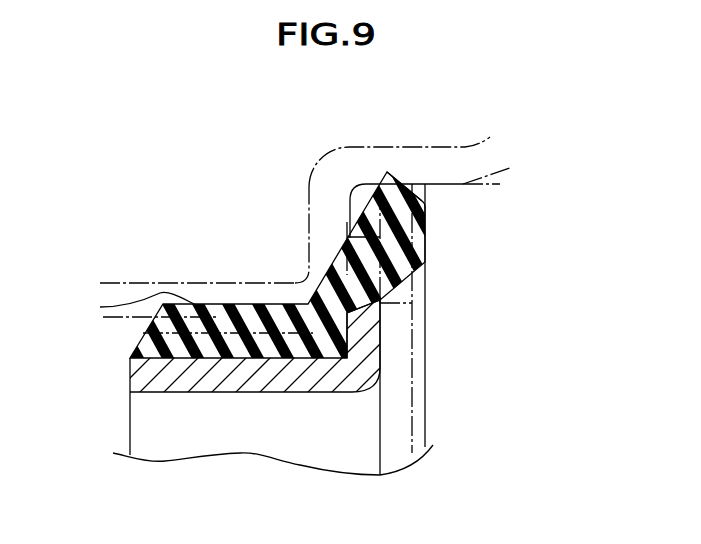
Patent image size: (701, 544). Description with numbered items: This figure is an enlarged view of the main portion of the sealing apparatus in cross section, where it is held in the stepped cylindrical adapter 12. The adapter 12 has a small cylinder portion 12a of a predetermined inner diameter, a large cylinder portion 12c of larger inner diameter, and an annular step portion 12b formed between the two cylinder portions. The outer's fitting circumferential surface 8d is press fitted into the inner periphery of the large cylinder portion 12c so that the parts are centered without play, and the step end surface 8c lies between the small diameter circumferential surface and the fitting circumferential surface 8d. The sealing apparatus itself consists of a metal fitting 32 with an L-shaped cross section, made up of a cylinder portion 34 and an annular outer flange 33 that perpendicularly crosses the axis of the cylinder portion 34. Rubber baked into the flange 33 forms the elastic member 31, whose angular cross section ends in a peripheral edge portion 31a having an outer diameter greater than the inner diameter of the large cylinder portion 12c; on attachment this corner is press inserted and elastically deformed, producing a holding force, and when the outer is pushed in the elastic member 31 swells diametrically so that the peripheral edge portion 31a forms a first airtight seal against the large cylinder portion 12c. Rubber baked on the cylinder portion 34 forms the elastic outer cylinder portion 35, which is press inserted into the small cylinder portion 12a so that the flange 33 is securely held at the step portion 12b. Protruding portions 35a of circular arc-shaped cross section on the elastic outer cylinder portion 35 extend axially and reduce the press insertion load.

The adapter 12 is at (292, 182).
The small cylinder portion 12a is at (147, 283).
The annular step portion 12b is at (309, 190).
The large cylinder portion 12c is at (420, 147).
The step end surface 8c is at (410, 287).
The fitting circumferential surface 8d is at (500, 184).
The elastic member 31 is at (432, 240).
The peripheral edge portion 31a is at (390, 172).
The metal fitting 32 is at (365, 400).
The annular outer flange 33 is at (372, 328).
The cylinder portion 34 is at (247, 383).
The elastic outer cylinder portion 35 is at (132, 352).
The protruding portions 35a is at (100, 307).